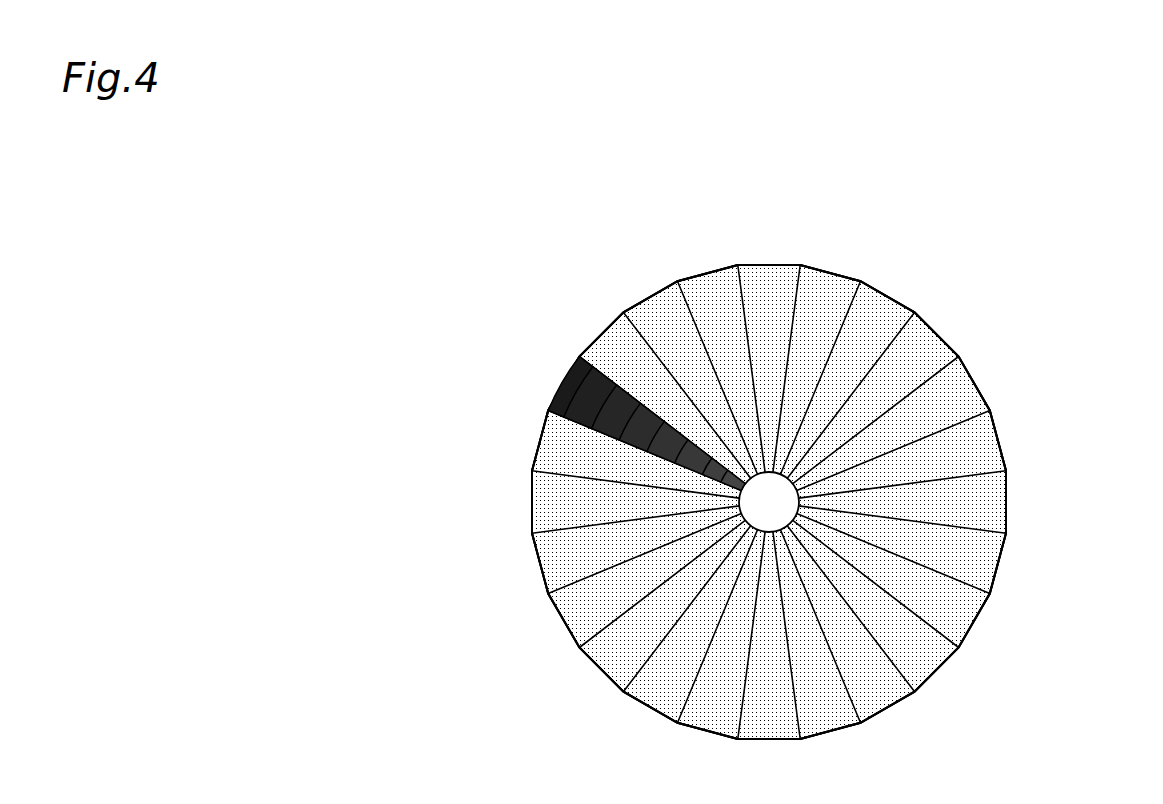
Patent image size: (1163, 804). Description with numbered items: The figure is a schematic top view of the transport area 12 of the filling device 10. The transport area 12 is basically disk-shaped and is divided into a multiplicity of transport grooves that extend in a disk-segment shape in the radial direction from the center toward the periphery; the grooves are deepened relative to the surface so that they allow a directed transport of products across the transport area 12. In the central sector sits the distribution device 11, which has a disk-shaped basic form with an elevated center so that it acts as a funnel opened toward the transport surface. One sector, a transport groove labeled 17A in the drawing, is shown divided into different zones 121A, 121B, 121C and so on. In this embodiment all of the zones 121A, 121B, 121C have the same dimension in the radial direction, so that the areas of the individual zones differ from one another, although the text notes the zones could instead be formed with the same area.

The filling device 10 is at (437, 542).
The distribution device 11 is at (960, 362).
The transport area 12 is at (580, 652).
The sector segment 17A is at (599, 310).
The zone 121A is at (773, 482).
The zone 121B is at (737, 460).
The zone 121C is at (693, 445).